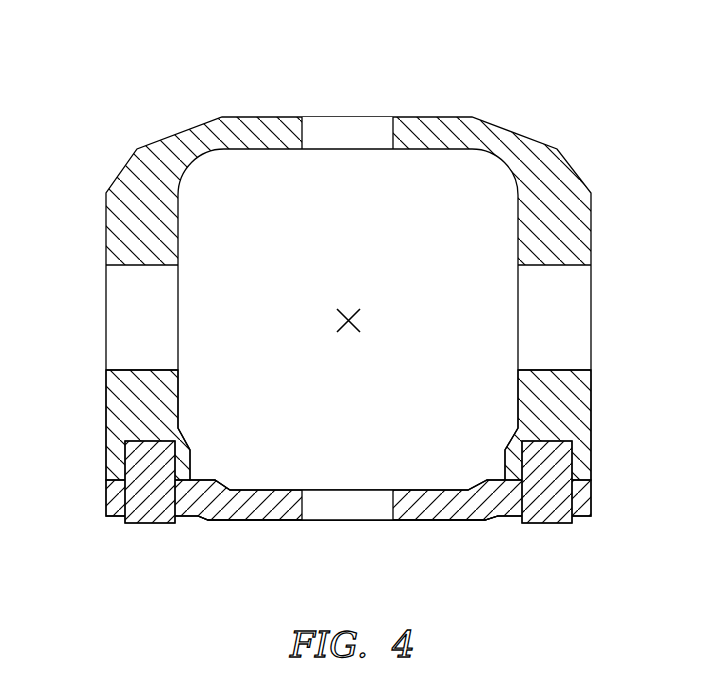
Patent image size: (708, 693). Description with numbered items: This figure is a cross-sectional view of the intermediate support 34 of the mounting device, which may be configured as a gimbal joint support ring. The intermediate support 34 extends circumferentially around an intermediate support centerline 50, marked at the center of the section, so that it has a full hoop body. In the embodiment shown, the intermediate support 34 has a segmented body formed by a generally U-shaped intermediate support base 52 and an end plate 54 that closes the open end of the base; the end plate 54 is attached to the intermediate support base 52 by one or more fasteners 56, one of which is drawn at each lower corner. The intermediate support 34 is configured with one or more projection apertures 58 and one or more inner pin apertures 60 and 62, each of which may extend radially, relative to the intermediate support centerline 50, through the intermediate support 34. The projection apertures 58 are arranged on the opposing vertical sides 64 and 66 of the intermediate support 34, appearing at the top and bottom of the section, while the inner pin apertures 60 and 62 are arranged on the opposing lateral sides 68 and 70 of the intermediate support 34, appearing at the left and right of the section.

The intermediate support 34 is at (604, 91).
The intermediate support centerline 50 is at (348, 330).
The intermediate support base 52 is at (603, 230).
The end plate 54 is at (218, 530).
The fasteners 56 is at (141, 525).
The projection apertures 58 is at (340, 122).
The inner pin aperture 60 is at (112, 318).
The inner pin aperture 62 is at (583, 316).
The vertical side 64 is at (462, 520).
The vertical side 66 is at (435, 117).
The lateral side 68 is at (106, 417).
The lateral side 70 is at (591, 417).